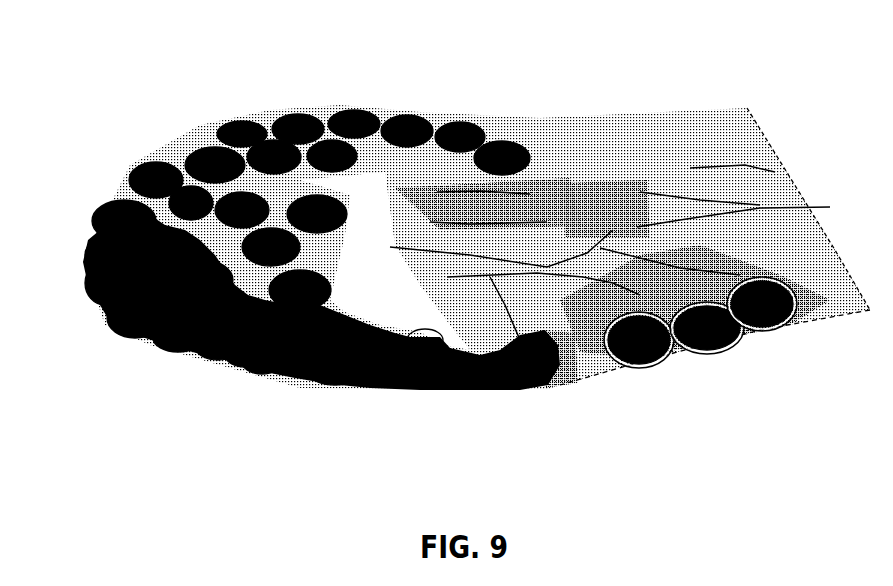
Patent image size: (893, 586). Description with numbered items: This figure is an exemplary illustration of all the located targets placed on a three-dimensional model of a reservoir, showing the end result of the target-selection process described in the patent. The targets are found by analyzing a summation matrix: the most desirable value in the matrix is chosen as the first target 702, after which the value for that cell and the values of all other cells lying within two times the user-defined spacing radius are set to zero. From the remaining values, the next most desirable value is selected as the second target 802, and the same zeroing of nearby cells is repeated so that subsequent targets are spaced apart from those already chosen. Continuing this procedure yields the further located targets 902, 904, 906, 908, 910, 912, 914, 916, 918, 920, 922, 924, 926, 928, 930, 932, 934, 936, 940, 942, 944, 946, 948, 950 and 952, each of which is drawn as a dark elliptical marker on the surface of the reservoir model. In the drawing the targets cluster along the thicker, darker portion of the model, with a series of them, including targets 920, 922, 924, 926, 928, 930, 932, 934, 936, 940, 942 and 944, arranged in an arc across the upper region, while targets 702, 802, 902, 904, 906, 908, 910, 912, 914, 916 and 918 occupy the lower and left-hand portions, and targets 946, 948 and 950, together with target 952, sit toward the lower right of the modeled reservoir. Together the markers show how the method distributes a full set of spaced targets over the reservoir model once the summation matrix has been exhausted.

The first target 702 is at (203, 357).
The second target 802 is at (273, 375).
The located target 902 is at (353, 387).
The located target 904 is at (327, 380).
The located target 906 is at (255, 358).
The located target 908 is at (251, 358).
The located target 910 is at (167, 343).
The located target 912 is at (110, 323).
The located target 914 is at (85, 275).
The located target 916 is at (97, 240).
The located target 918 is at (97, 212).
The located target 920 is at (140, 163).
The located target 922 is at (188, 182).
The located target 924 is at (208, 143).
The located target 926 is at (242, 118).
The located target 928 is at (272, 143).
The located target 930 is at (292, 115).
The located target 932 is at (327, 140).
The located target 934 is at (355, 115).
The located target 936 is at (340, 198).
The located target 940 is at (413, 118).
The located target 942 is at (458, 123).
The located target 944 is at (503, 145).
The located target 946 is at (780, 325).
The located target 948 is at (720, 350).
The located target 950 is at (650, 363).
The located target 952 is at (430, 392).